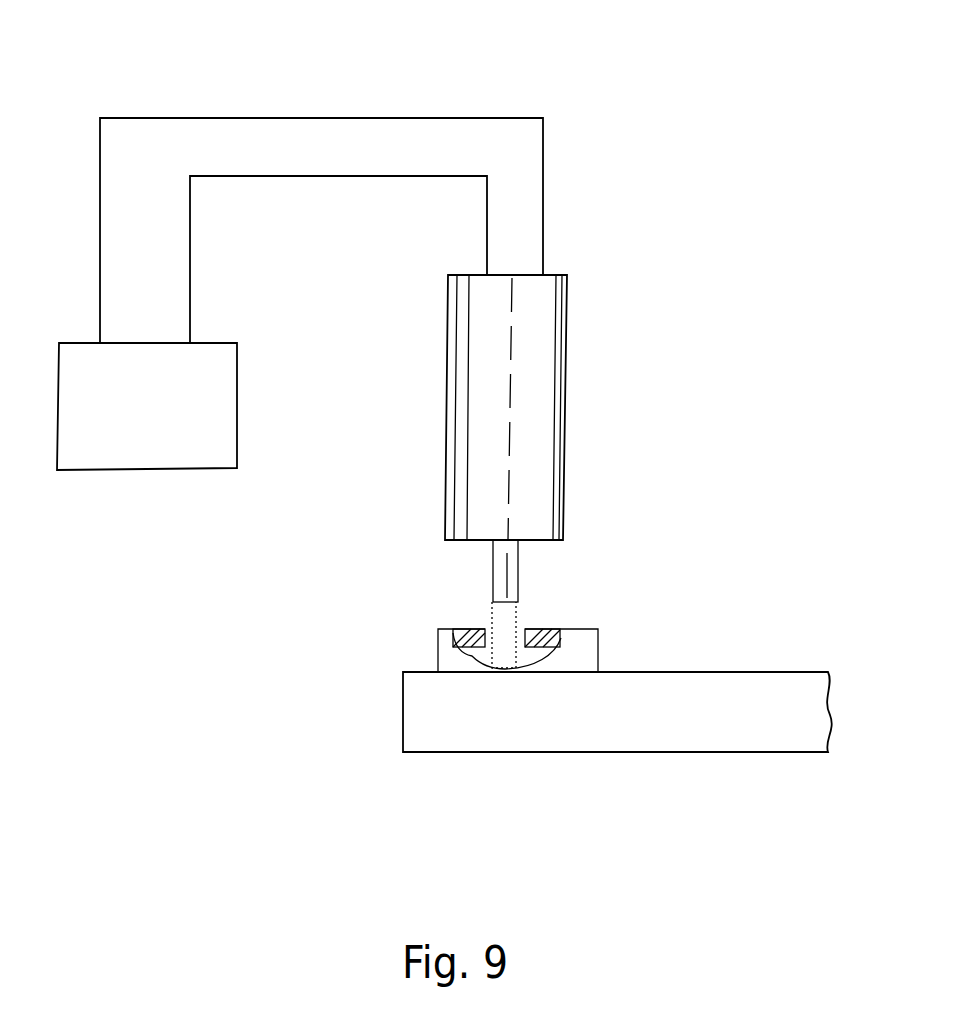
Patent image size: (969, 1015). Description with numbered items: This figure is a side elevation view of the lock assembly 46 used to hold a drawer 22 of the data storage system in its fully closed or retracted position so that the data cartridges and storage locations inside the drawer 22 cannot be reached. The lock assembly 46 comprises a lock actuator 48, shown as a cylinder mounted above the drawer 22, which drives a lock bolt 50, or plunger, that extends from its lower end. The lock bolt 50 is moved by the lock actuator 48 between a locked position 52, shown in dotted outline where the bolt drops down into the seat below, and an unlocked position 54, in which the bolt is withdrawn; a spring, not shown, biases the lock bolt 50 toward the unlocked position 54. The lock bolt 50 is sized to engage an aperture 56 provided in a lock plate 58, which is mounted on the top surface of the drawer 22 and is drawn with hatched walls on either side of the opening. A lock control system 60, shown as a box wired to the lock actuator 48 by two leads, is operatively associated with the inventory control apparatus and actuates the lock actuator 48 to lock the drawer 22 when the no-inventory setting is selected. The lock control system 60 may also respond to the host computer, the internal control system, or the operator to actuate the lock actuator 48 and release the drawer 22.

The lock assembly 46 is at (232, 66).
The lock control system 60 is at (237, 404).
The lock actuator 48 is at (448, 425).
The lock bolt 50 is at (493, 575).
The unlocked position 54 is at (503, 604).
The aperture 56 is at (525, 632).
The lock plate 58 is at (598, 650).
The locked position 52 is at (512, 672).
The drawer 22 is at (612, 752).